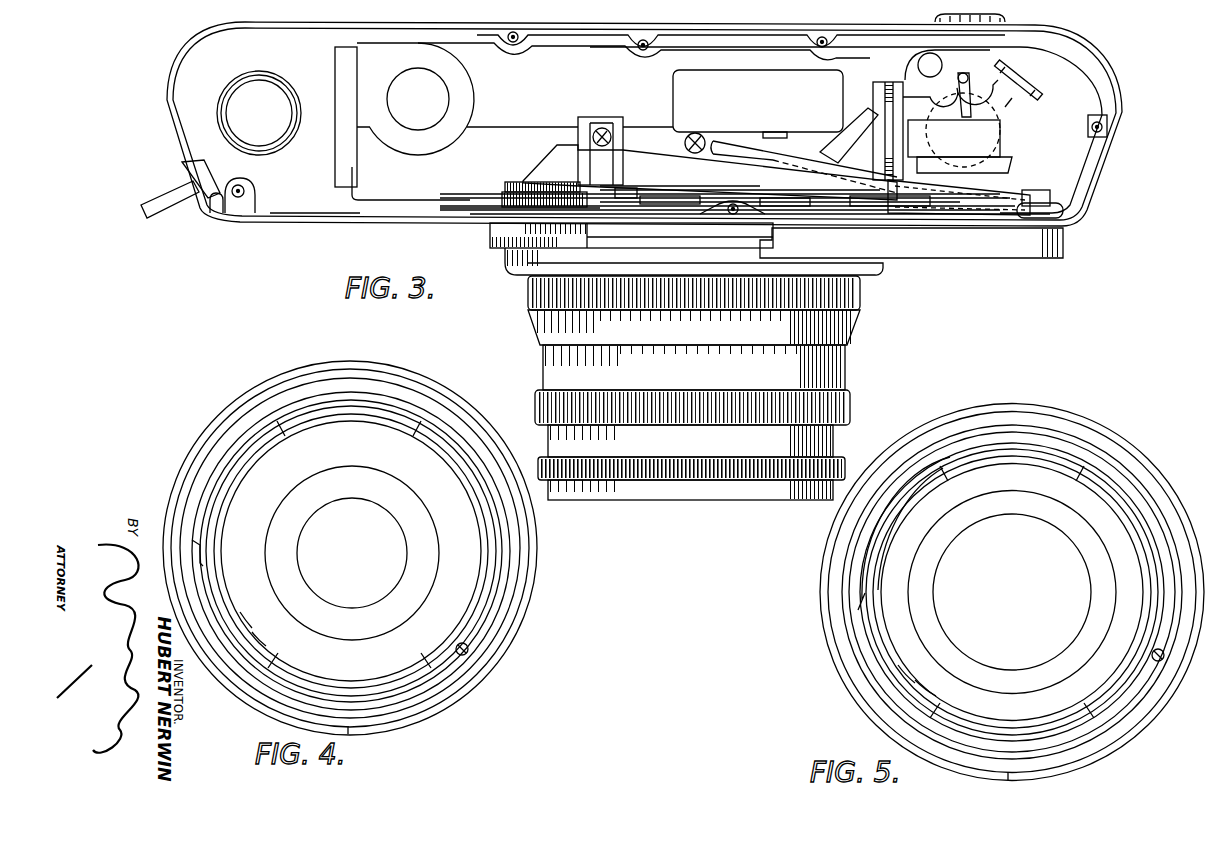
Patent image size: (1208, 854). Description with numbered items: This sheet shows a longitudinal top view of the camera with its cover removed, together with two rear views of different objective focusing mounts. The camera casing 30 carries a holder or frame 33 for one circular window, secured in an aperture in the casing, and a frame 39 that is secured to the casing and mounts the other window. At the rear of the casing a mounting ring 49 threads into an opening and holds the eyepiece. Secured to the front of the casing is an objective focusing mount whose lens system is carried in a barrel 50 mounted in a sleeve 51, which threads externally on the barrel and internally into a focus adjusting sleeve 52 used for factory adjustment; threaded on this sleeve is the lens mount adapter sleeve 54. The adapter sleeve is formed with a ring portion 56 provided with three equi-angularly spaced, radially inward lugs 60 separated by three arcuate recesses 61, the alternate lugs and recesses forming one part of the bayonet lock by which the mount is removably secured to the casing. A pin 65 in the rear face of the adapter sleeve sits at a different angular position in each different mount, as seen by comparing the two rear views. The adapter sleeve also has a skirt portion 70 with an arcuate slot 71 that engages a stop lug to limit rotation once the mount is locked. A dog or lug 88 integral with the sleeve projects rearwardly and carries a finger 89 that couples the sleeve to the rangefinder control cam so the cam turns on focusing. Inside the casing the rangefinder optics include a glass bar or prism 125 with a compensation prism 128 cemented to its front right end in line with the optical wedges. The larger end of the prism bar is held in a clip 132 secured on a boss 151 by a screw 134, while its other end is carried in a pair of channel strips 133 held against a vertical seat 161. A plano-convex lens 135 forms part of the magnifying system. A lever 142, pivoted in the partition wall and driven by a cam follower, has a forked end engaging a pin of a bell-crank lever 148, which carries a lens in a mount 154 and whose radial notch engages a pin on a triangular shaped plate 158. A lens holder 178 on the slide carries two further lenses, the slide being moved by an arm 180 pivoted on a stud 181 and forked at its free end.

In FIG. 3, the camera casing 30 is at (300, 222).
In FIG. 3, the holder or frame 33 is at (493, 238).
In FIG. 3, the frame 39 is at (1017, 248).
In FIG. 3, the mounting ring 49 is at (1018, 28).
In FIG. 3, the barrel 50 is at (827, 455).
In FIG. 3, the sleeve 51 is at (557, 432).
In FIG. 3, the sleeve 52 is at (557, 362).
In FIG. 3, the lens mount adapter sleeve 54 is at (530, 303).
In FIG. 4, the ring portion 56 is at (383, 693).
In FIG. 5, the ring portion 56 is at (1062, 738).
In FIG. 4, the lugs 60 is at (475, 617).
In FIG. 5, the lugs 60 is at (950, 460).
In FIG. 4, the arcuate recesses 61 is at (417, 425).
In FIG. 5, the arcuate recesses 61 is at (985, 737).
In FIG. 4, the pin 65 is at (470, 658).
In FIG. 5, the pin 65 is at (1158, 662).
In FIG. 3, the skirt portion 70 is at (883, 268).
In FIG. 4, the arcuate slot 71 is at (447, 697).
In FIG. 5, the arcuate slot 71 is at (1125, 738).
In FIG. 4, the dog or lug 88 is at (263, 647).
In FIG. 5, the dog or lug 88 is at (905, 673).
In FIG. 4, the finger 89 is at (252, 628).
In FIG. 5, the finger 89 is at (920, 682).
In FIG. 3, the glass bar or prism 125 is at (680, 163).
In FIG. 3, the compensation prism 128 is at (530, 175).
In FIG. 3, the clip 132 is at (602, 170).
In FIG. 3, the channel strips 133 is at (993, 200).
In FIG. 3, the screw 134 is at (607, 130).
In FIG. 3, the plano-convex lens 135 is at (982, 174).
In FIG. 3, the lever 142 is at (850, 118).
In FIG. 3, the bell-crank lever 148 is at (1005, 107).
In FIG. 3, the boss 151 is at (600, 120).
In FIG. 3, the mount 154 is at (1027, 88).
In FIG. 3, the triangular shaped plate 158 is at (955, 78).
In FIG. 3, the seat 161 is at (1042, 195).
In FIG. 3, the lens holder 178 is at (1000, 140).
In FIG. 3, the arm 180 is at (818, 168).
In FIG. 3, the stud 181 is at (697, 138).